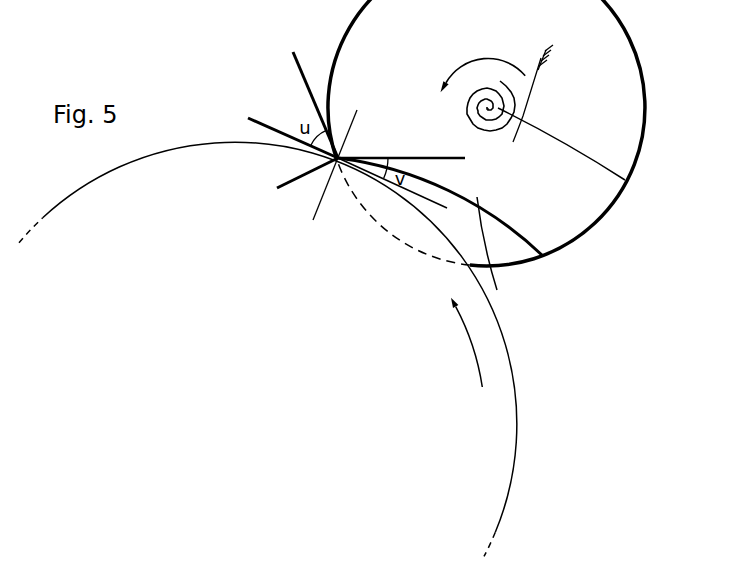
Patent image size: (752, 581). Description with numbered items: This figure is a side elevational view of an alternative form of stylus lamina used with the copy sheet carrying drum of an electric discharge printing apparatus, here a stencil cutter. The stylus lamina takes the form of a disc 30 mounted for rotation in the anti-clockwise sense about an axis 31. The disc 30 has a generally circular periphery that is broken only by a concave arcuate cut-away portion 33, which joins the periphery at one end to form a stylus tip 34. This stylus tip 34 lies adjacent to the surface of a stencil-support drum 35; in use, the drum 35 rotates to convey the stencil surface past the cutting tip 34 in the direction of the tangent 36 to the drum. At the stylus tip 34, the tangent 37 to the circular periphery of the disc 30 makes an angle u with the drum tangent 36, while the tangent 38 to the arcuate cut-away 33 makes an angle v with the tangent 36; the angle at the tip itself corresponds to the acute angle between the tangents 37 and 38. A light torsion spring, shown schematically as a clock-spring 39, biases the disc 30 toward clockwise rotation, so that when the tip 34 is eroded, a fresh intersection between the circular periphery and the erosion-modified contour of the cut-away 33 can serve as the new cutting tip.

The disc 30 is at (620, 127).
The axis 31 is at (625, 180).
The concave arcuate cut-away portion 33 is at (497, 290).
The stylus tip 34 is at (294, 185).
The stencil-support drum 35 is at (517, 463).
The tangent to the drum 36 is at (252, 114).
The tangent to the circular periphery 37 is at (300, 73).
The tangent to the arcuate cut-away 38 is at (437, 156).
The clock-spring 39 is at (497, 134).